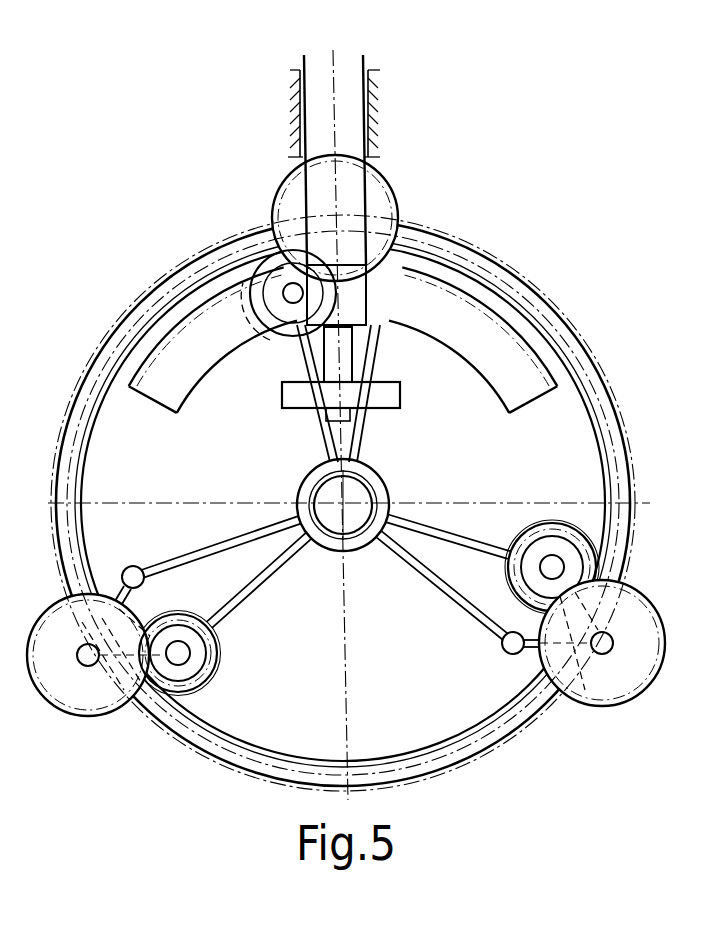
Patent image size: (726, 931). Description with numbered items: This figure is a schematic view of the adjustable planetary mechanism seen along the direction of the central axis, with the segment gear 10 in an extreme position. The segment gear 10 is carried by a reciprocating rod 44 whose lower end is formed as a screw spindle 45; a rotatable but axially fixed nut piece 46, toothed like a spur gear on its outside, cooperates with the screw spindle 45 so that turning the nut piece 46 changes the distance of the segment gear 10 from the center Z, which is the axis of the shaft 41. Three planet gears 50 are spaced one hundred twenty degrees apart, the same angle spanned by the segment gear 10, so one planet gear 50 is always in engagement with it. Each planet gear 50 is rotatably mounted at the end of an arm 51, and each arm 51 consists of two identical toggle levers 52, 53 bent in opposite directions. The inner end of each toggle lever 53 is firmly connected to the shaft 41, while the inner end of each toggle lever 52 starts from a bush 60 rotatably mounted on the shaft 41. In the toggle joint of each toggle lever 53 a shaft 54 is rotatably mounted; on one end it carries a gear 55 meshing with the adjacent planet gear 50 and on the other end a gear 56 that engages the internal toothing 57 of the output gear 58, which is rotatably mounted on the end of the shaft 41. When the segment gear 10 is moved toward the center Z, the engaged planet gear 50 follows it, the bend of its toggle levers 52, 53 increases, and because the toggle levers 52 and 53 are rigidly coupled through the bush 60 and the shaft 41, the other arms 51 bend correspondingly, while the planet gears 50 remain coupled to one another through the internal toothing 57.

The segment gear 10 is at (466, 362).
The shaft 41 is at (363, 490).
The reciprocating rod 44 is at (355, 160).
The screw spindle 45 is at (353, 352).
The nut piece 46 is at (294, 410).
The planet gear 50 is at (376, 186).
The arm 51 is at (175, 525).
The toggle lever 52 is at (230, 530).
The toggle lever 53 is at (452, 512).
The shaft 54 is at (148, 695).
The gear 55 is at (346, 455).
The gear 56 is at (510, 582).
The internal toothing 57 is at (368, 503).
The output gear 58 is at (592, 378).
The bush 60 is at (360, 548).
The center Z is at (342, 508).